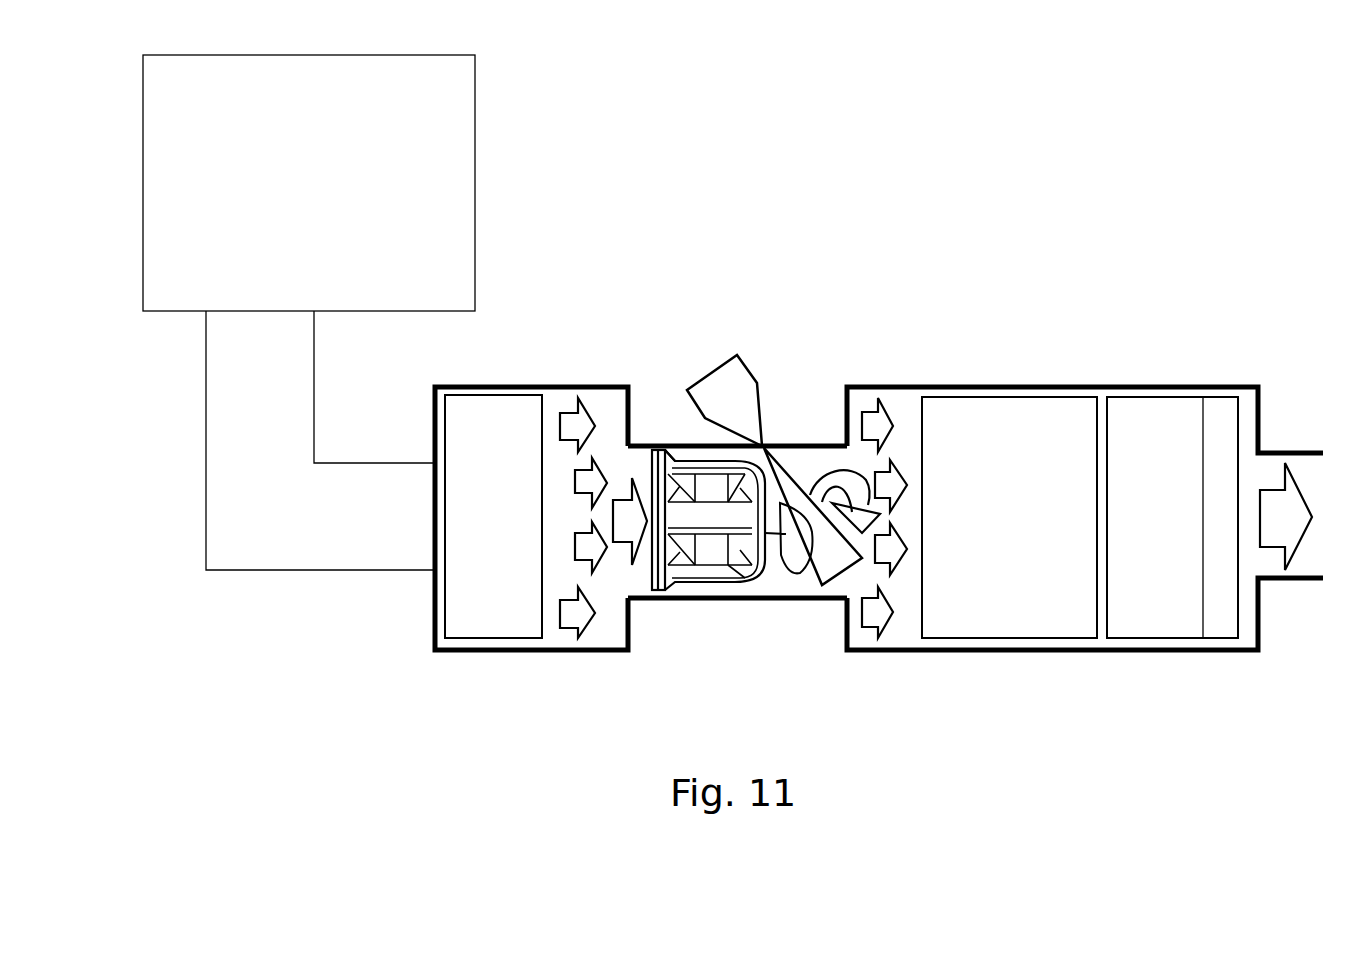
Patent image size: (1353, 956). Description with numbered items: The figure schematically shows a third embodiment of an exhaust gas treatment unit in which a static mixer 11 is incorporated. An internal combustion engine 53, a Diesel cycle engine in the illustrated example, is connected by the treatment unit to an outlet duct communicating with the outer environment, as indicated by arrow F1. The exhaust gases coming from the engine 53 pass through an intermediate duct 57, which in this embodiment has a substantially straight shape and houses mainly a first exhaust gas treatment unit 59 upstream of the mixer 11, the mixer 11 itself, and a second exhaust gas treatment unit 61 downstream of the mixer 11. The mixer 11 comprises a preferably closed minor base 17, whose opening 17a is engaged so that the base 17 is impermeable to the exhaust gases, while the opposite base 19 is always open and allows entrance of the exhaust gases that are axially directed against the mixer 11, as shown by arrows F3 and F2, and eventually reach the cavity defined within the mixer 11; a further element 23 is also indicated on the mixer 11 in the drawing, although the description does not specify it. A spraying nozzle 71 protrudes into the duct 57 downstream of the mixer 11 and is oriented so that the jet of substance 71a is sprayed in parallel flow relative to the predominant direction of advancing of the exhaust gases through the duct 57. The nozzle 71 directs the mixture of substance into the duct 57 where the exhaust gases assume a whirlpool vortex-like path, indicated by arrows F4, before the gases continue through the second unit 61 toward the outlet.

The static mixer 11 is at (714, 480).
The minor base 17 is at (757, 578).
The opening 17a is at (800, 574).
The opposite base 19 is at (637, 466).
The blower inlet 23 is at (700, 446).
The internal combustion engine 53 is at (325, 191).
The intermediate duct 57 is at (1272, 692).
The first exhaust gas treatment unit 59 is at (512, 532).
The second exhaust gas treatment unit 61 is at (1217, 408).
The spraying nozzle 71 is at (742, 366).
The jet of substance 71a is at (792, 474).
The outlet flow arrow F1 is at (1288, 480).
The air flow downstream of blower F2 is at (871, 402).
The exhaust gas flow arrow F3 is at (565, 402).
The vortex flow arrow F4 is at (872, 490).